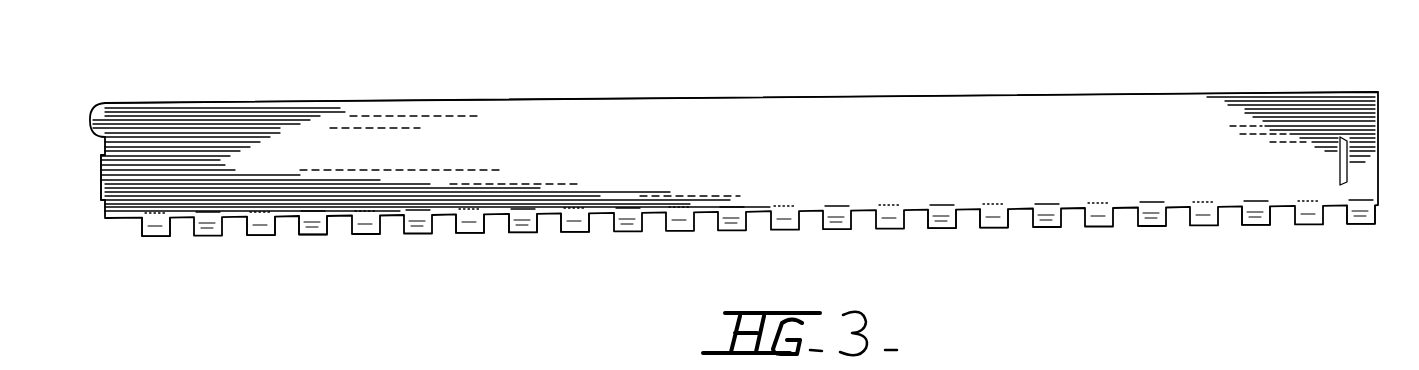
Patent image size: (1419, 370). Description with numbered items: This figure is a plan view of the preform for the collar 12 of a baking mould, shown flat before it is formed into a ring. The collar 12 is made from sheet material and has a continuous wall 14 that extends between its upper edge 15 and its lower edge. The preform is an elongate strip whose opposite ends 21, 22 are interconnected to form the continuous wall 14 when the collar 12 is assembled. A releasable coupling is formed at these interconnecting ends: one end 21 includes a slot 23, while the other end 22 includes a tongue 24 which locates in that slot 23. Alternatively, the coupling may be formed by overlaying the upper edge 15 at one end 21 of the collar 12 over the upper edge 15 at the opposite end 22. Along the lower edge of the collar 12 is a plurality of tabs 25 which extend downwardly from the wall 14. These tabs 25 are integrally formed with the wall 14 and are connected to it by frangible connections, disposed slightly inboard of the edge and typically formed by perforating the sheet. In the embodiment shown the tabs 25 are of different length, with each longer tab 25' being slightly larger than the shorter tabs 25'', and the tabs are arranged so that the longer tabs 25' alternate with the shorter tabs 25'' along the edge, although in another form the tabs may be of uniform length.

The collar 12 is at (985, 123).
The continuous wall 14 is at (728, 179).
The upper edge 15 is at (467, 102).
The end 21 is at (1380, 123).
The end 22 is at (107, 211).
The slot 23 is at (1337, 162).
The tongue 24 is at (105, 177).
The tabs 25 is at (1049, 261).
The longer tab 25' is at (837, 260).
The shorter tab 25'' is at (566, 263).